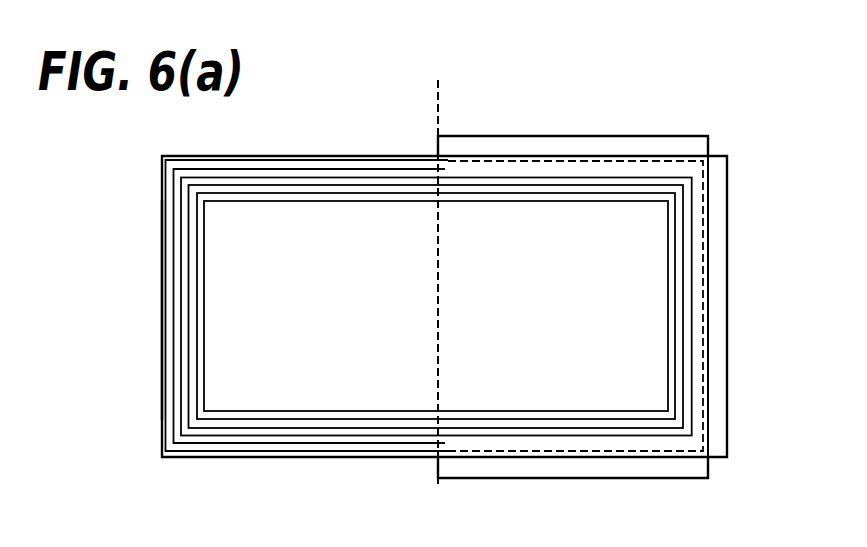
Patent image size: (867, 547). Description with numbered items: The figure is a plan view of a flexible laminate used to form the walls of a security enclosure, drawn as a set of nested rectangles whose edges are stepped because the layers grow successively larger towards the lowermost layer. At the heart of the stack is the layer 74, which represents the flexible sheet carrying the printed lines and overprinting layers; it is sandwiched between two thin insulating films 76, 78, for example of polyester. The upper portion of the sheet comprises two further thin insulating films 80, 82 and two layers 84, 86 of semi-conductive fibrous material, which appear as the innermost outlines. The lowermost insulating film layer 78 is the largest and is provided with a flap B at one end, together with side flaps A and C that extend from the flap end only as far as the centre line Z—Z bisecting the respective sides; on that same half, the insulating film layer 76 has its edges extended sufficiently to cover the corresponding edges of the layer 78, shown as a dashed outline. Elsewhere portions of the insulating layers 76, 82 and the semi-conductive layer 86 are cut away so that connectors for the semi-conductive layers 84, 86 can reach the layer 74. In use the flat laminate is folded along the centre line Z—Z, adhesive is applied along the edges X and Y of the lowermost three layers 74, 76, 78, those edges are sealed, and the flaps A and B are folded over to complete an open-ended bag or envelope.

The layer 74 is at (452, 307).
The thin insulating film 76 is at (210, 449).
The lowermost insulating film layer 78 is at (182, 459).
The thin insulating film 80 is at (267, 403).
The thin insulating film 82 is at (237, 423).
The layer of semi-conductive fibrous material 84 is at (315, 415).
The layer of semi-conductive fibrous material 86 is at (340, 430).
The edge X is at (290, 157).
The edge Y is at (162, 290).
The centre line Z is at (453, 302).
The side flap A is at (588, 146).
The flap B is at (738, 278).
The side flap C is at (587, 470).